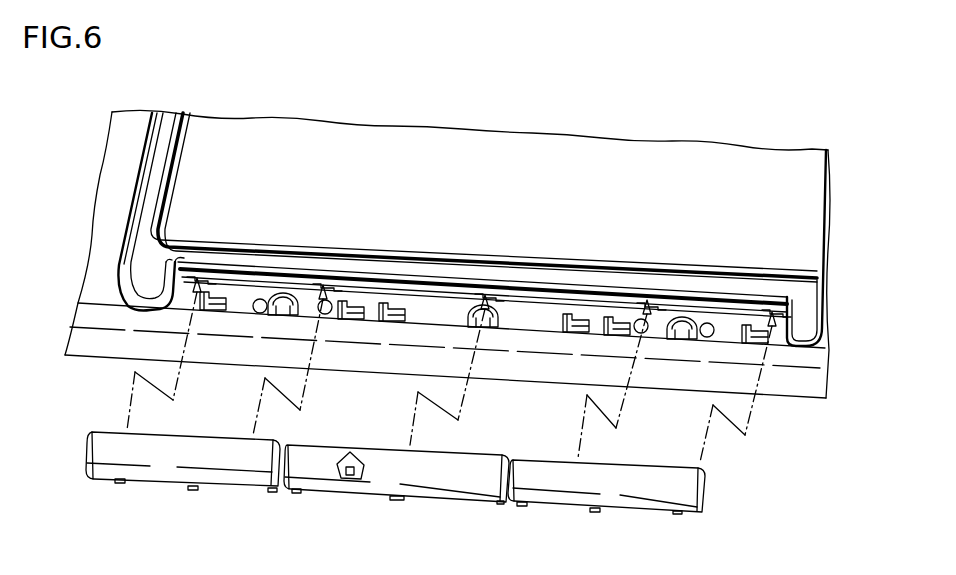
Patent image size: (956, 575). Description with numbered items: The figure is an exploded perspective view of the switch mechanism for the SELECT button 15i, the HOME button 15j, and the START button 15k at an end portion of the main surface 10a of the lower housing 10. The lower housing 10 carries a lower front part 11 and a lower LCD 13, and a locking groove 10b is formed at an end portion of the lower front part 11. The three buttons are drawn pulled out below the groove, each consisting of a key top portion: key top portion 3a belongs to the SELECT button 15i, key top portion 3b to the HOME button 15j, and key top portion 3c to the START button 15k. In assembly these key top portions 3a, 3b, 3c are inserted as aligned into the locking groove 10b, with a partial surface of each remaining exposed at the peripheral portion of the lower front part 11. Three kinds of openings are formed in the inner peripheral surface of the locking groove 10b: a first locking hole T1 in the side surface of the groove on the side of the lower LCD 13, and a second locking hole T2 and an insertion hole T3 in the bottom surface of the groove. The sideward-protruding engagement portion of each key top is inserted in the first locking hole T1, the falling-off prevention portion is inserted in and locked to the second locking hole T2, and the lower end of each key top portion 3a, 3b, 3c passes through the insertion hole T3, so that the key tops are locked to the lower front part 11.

The lower housing 10 is at (130, 140).
The lower front part 11 is at (122, 163).
The main surface 10a is at (113, 200).
The locking groove 10b is at (183, 300).
The lower LCD 13 is at (260, 145).
The first locking hole T1 is at (205, 272).
The second locking hole T2 is at (220, 313).
The insertion hole T3 is at (285, 301).
The key top portion 3a is at (122, 452).
The key top portion 3b is at (325, 463).
The key top portion 3c is at (550, 477).
The SELECT button 15i is at (253, 460).
The HOME button 15j is at (482, 472).
The START button 15k is at (676, 483).